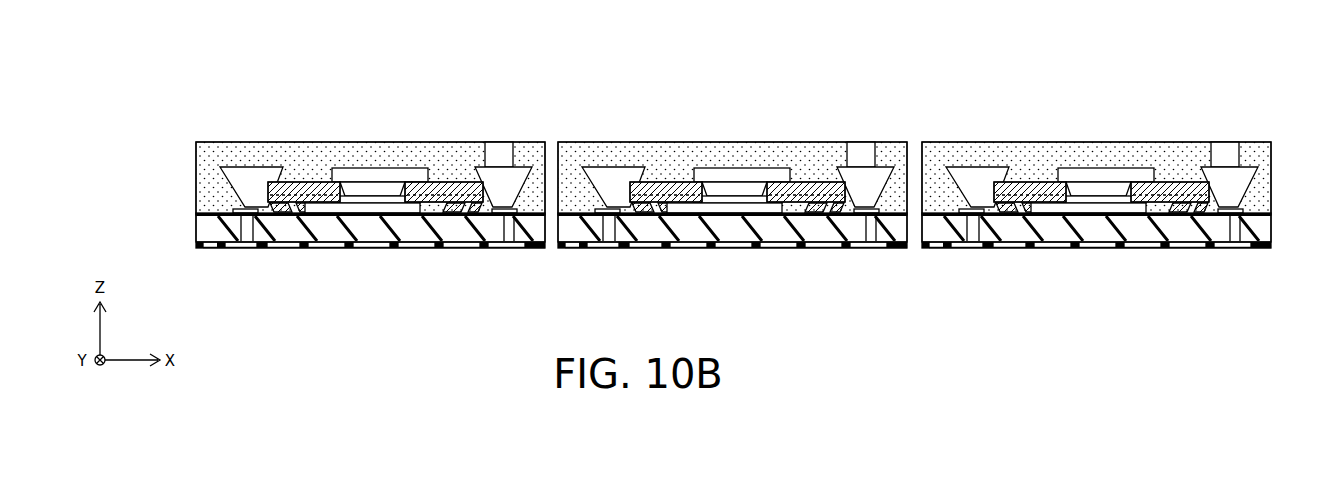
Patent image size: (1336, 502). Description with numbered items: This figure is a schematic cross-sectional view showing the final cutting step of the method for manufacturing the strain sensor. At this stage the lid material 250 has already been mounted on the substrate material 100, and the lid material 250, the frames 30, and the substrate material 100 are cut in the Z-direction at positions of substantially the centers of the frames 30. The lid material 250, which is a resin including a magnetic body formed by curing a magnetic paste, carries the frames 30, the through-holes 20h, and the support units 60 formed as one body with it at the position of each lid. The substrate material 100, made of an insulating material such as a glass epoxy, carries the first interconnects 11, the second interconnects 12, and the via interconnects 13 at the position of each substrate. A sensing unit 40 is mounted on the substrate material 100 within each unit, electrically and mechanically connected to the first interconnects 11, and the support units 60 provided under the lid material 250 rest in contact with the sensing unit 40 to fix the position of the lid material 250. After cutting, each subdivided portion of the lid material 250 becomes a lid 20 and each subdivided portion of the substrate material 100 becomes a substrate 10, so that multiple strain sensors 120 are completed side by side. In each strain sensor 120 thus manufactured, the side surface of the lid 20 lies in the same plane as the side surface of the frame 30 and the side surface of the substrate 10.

The substrate 10 is at (733, 252).
The first interconnect 11 is at (740, 254).
The second interconnect 12 is at (733, 278).
The via interconnect 13 is at (729, 262).
The lid 20 is at (733, 135).
The through-hole 20h is at (855, 112).
The frame 30 is at (733, 150).
The sensing unit 40 is at (730, 138).
The support unit 60 is at (738, 150).
The substrate material 100 is at (243, 177).
The strain sensor 120 is at (840, 128).
The lid material 250 is at (262, 130).